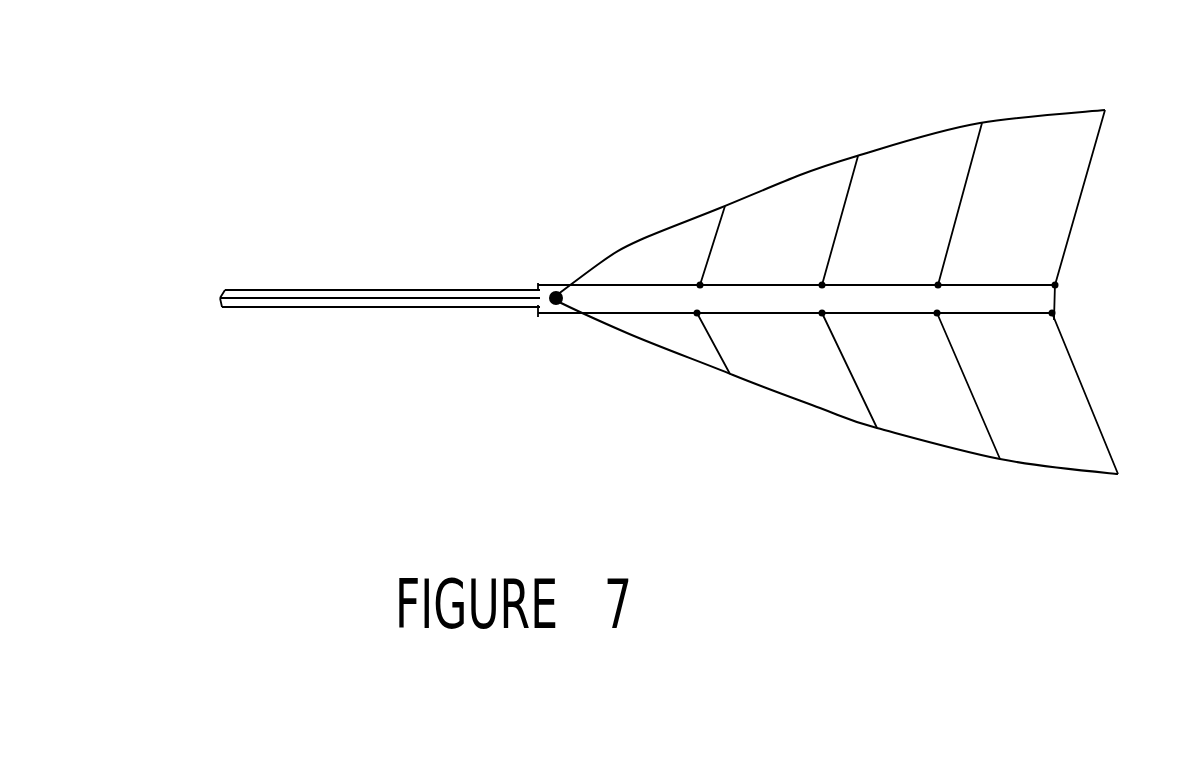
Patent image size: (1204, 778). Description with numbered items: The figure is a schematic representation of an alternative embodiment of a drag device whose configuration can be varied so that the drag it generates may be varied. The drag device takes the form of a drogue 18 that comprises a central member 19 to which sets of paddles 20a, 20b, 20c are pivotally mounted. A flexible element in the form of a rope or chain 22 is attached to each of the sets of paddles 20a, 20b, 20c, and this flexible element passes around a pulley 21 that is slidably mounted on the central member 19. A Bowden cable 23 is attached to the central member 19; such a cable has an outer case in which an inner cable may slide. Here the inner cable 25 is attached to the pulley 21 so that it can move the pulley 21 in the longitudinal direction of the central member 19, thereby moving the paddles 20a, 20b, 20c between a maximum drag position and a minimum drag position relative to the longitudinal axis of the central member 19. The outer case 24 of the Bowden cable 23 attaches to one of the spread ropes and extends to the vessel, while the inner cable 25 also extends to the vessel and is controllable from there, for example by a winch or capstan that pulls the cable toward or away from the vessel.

The drogue 18 is at (618, 150).
The central member 19 is at (1030, 298).
The paddles 20a is at (718, 228).
The paddles 20b is at (983, 143).
The paddles 20c is at (852, 178).
The pulley 21 is at (558, 289).
The rope or chain 22 is at (603, 261).
The Bowden cable 23 is at (380, 291).
The outer case 24 is at (378, 308).
The inner cable 25 is at (220, 298).